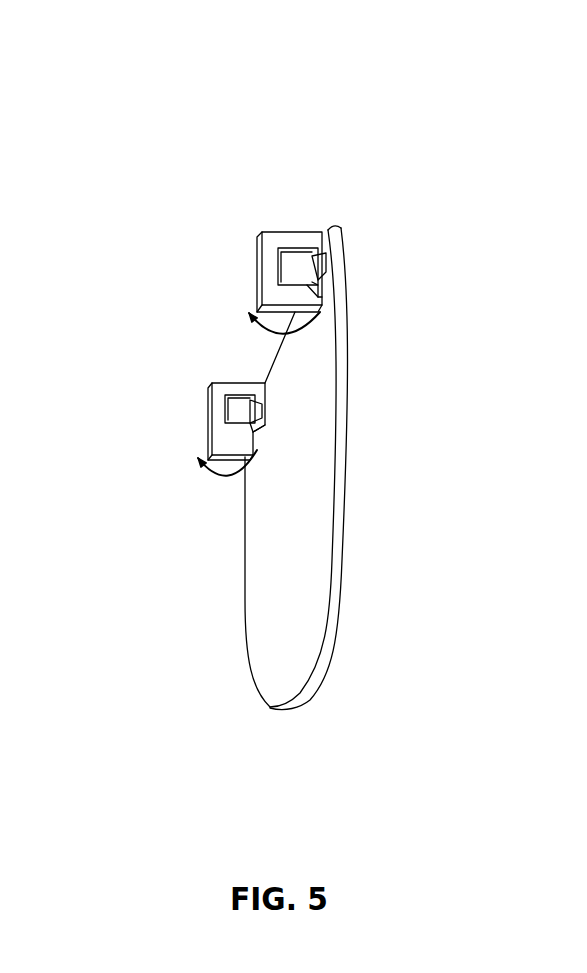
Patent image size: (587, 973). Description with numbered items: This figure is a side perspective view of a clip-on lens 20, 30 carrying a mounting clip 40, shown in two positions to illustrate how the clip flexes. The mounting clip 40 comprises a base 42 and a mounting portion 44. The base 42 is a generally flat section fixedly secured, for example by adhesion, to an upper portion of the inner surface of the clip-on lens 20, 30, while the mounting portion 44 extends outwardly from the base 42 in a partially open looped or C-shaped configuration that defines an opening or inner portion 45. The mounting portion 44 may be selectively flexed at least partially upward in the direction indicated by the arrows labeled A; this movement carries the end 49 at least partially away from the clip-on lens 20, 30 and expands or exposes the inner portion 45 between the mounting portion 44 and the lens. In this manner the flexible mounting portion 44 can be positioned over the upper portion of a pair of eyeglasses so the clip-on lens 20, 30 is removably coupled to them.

The clip-on lens 20 is at (390, 360).
The clip-on lens 30 is at (296, 468).
The mounting clip 40 is at (277, 305).
The base 42 is at (327, 258).
The mounting portion 44 is at (257, 246).
The inner portion 45 is at (326, 291).
The end 49 is at (317, 290).